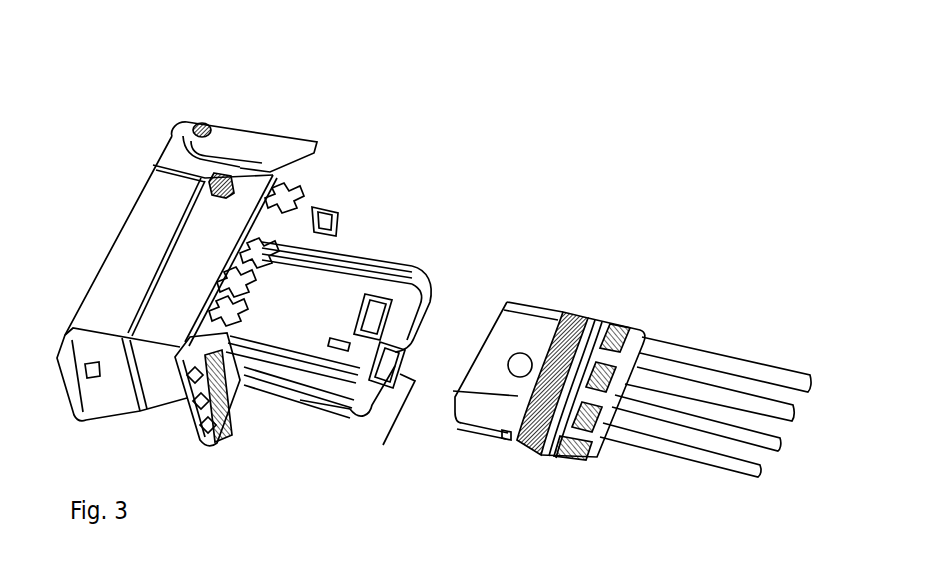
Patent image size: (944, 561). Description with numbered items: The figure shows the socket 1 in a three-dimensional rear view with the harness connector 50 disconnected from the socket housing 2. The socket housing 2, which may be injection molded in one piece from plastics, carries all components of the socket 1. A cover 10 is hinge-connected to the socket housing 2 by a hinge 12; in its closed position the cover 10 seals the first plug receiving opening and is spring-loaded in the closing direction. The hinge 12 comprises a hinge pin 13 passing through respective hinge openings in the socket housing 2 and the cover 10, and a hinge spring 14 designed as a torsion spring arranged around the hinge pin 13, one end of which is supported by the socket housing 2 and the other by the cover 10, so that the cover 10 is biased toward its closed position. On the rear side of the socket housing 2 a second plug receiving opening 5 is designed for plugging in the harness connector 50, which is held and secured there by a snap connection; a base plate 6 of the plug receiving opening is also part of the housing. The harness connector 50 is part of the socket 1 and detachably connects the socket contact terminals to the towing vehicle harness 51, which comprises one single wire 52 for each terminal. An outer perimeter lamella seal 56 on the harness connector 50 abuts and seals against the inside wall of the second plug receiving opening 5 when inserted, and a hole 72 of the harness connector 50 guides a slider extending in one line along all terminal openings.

The socket 1 is at (503, 172).
The socket housing 2 is at (272, 220).
The second plug receiving opening 5 is at (328, 360).
The base plate 6 is at (222, 358).
The cover 10 is at (130, 253).
The hinge 12 is at (218, 110).
The hinge pin 13 is at (195, 124).
The hinge spring 14 is at (240, 167).
The harness connector 50 is at (563, 290).
The towing vehicle harness 51 is at (737, 337).
The single wire 52 is at (698, 457).
The outer perimeter lamella seal 56 is at (533, 453).
The hole 72 is at (503, 440).